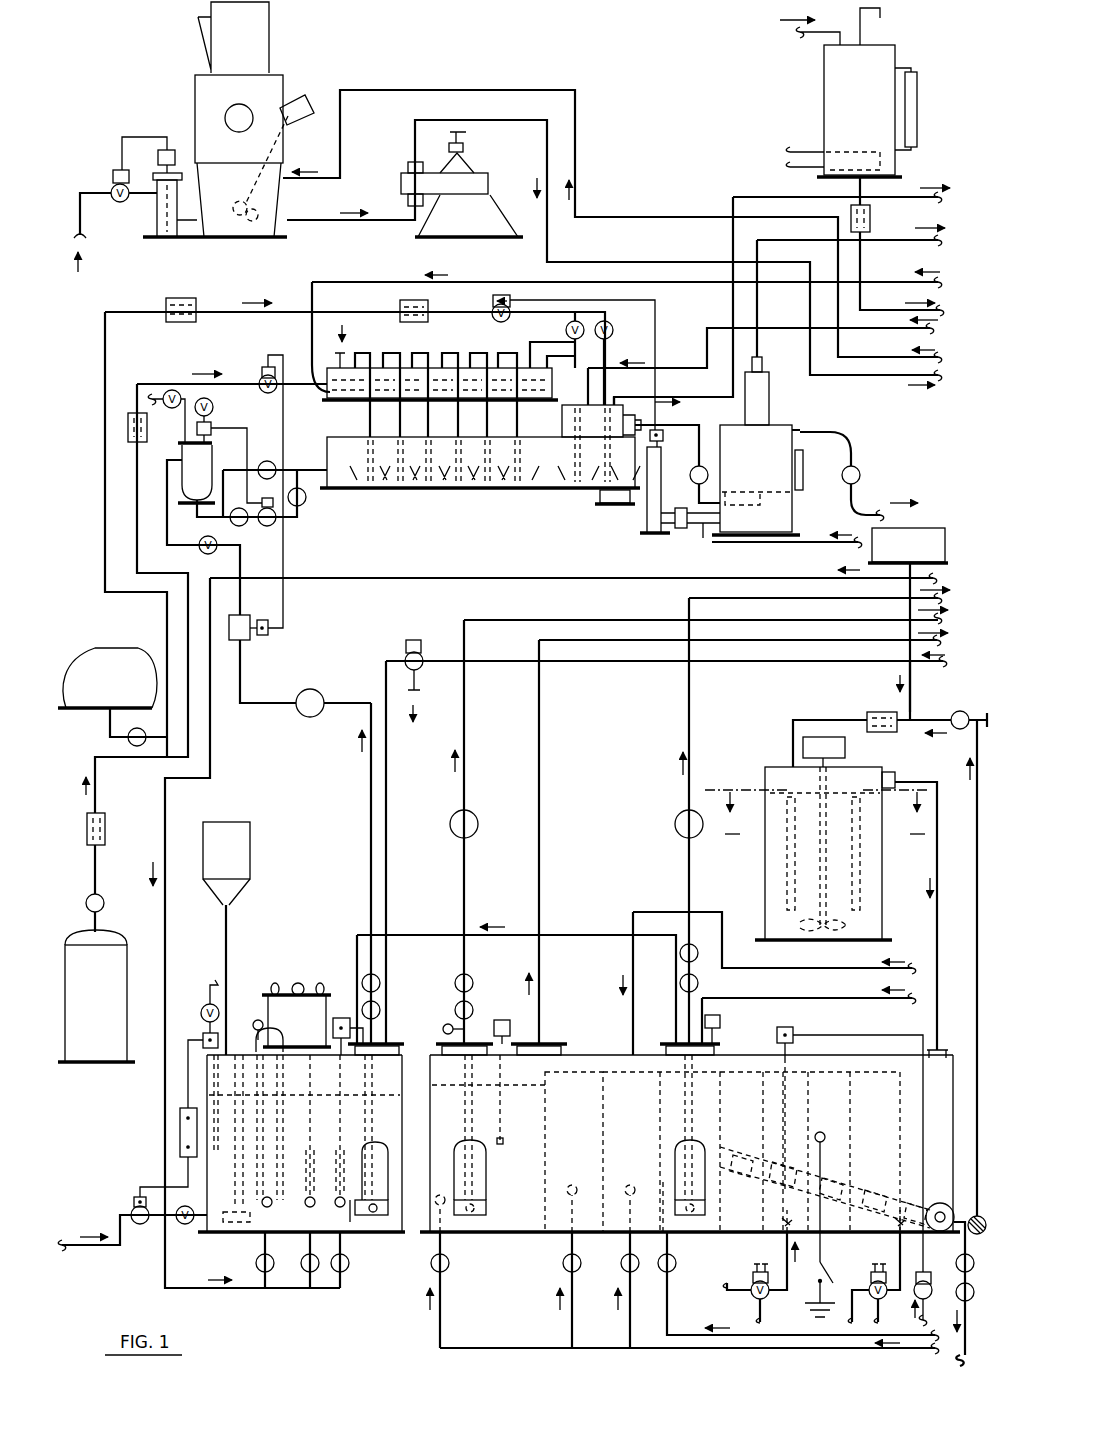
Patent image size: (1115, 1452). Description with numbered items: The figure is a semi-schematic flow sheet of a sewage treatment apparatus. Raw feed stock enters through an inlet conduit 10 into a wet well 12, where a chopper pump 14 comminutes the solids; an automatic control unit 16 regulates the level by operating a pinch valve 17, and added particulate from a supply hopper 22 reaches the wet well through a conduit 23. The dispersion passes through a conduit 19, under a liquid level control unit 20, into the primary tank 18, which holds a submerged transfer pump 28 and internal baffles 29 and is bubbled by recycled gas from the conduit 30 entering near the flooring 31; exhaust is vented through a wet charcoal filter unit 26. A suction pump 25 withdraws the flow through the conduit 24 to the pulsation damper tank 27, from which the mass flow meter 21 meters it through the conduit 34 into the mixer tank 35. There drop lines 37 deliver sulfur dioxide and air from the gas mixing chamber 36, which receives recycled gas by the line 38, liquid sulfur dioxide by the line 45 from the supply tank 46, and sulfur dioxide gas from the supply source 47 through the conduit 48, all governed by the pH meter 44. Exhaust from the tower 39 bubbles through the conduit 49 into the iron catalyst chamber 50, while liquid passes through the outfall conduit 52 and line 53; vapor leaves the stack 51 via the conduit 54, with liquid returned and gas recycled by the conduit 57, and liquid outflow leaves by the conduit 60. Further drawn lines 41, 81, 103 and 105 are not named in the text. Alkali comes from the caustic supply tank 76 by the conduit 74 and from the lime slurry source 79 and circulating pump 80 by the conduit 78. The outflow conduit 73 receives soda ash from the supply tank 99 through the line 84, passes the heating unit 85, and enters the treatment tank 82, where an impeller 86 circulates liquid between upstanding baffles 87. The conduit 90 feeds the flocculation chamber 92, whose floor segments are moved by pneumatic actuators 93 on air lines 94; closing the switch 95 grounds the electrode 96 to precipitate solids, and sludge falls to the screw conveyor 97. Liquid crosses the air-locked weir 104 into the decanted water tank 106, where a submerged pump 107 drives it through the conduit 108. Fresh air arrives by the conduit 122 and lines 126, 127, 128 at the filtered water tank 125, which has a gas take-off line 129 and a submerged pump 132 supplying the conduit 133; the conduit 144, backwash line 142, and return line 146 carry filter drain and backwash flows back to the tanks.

The inlet conduit 10 is at (80, 1247).
The wet well 12 is at (213, 1220).
The chopper pump 14 is at (228, 1224).
The automatic control unit 16 is at (180, 1122).
The pinch valve 17 is at (140, 1226).
The primary tank 18 is at (350, 1224).
The conduit 19 is at (273, 1034).
The liquid level control unit 20 is at (340, 1042).
The mass flow meter 21 is at (262, 619).
The supply hopper 22 is at (233, 870).
The conduit 23 is at (230, 932).
The conduit 24 is at (369, 822).
The suction pump 25 is at (243, 641).
The wet charcoal filter unit 26 is at (314, 1010).
The pulsation damper tank 27 is at (200, 480).
The submerged transfer pump 28 is at (379, 1202).
The internal baffles 29 is at (342, 1178).
The conduit 30 is at (213, 757).
The flooring 31 is at (288, 1230).
The conduit 34 is at (290, 520).
The mixer tank 35 is at (340, 478).
The gas mixing chamber 36 is at (322, 393).
The drop lines 37 is at (398, 413).
The line 38 is at (392, 281).
The tower 39 is at (563, 421).
The line 41 is at (736, 196).
The pH meter 44 is at (664, 436).
The line 45 is at (213, 310).
The supply tank 46 is at (85, 660).
The supply source 47 is at (110, 953).
The conduit 48 is at (97, 775).
The conduit 49 is at (702, 440).
The iron catalyst chamber 50 is at (780, 482).
The stack 51 is at (768, 392).
The outfall conduit 52 is at (650, 512).
The line 53 is at (700, 530).
The conduit 54 is at (759, 328).
The conduit 57 is at (925, 330).
The conduit 60 is at (858, 446).
The outflow conduit 73 is at (905, 726).
The conduit 74 is at (862, 272).
The caustic supply tank 76 is at (826, 86).
The conduit 78 is at (549, 222).
The lime slurry source 79 is at (205, 128).
The circulating pump 80 is at (470, 225).
The line 81 is at (655, 215).
The treatment tank 82 is at (775, 858).
The line 84 is at (915, 697).
The heating unit 85 is at (880, 712).
The impeller 86 is at (823, 940).
The upstanding baffles 87 is at (785, 898).
The conduit 90 is at (938, 840).
The flocculation chamber 92 is at (742, 1060).
The pneumatic actuators 93 is at (760, 1150).
The air lines 94 is at (782, 1224).
The switch 95 is at (830, 1278).
The electrode 96 is at (820, 1132).
The screw conveyor 97 is at (940, 1203).
The supply tank 99 is at (935, 527).
The line 103 is at (977, 845).
The air-locked weir 104 is at (725, 1108).
The line 105 is at (815, 544).
The decanted water tank 106 is at (675, 1113).
The submerged pump 107 is at (695, 1210).
The conduit 108 is at (700, 722).
The conduit 122 is at (478, 1346).
The filtered water tank 125 is at (512, 1226).
The line 126 is at (445, 1326).
The line 127 is at (575, 1280).
The line 128 is at (630, 1323).
The gas take-off line 129 is at (542, 808).
The submerged pump 132 is at (480, 1166).
The conduit 133 is at (467, 752).
The backwash line 142 is at (918, 999).
The conduit 144 is at (918, 966).
The return line 146 is at (390, 787).